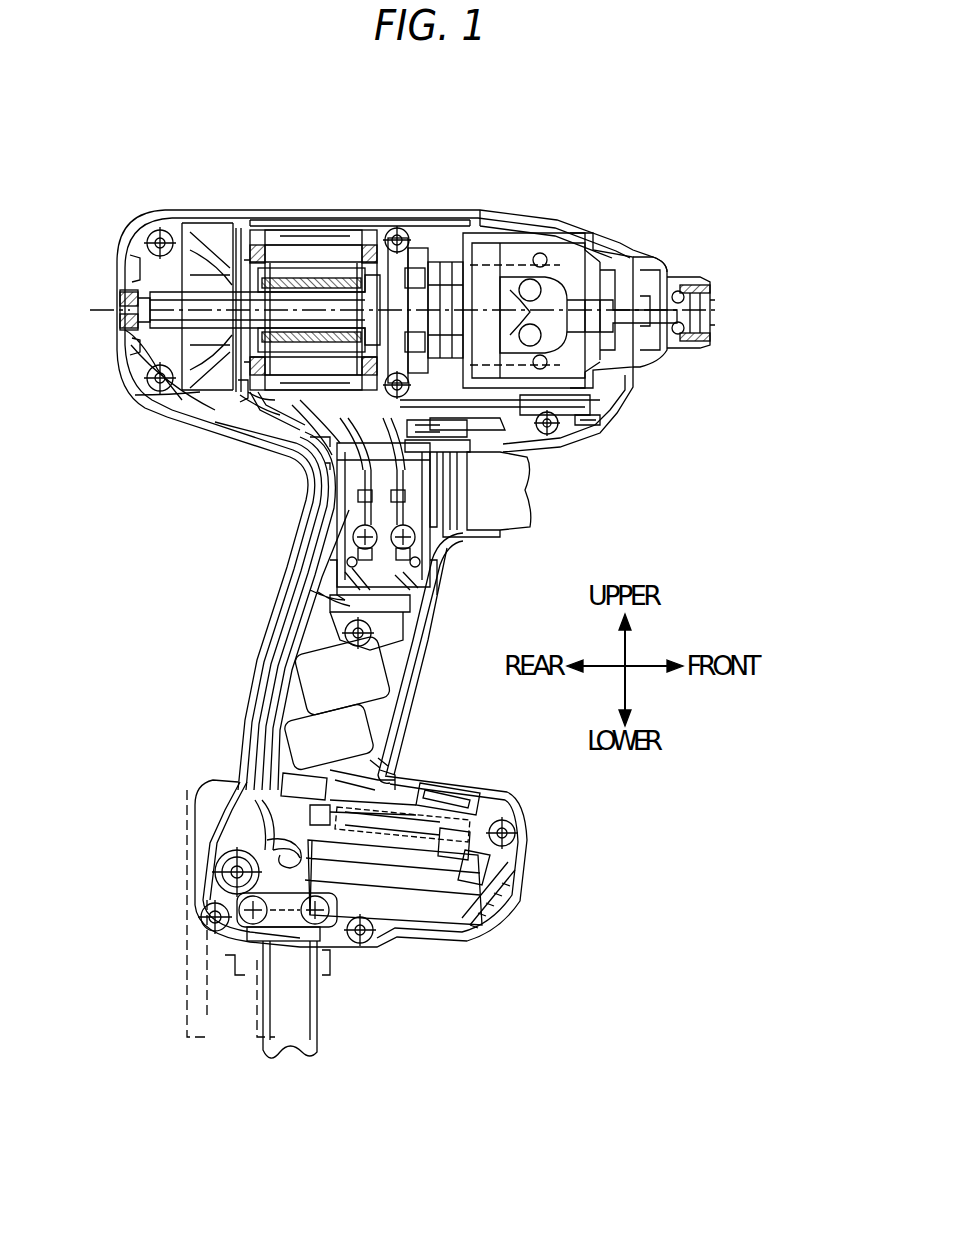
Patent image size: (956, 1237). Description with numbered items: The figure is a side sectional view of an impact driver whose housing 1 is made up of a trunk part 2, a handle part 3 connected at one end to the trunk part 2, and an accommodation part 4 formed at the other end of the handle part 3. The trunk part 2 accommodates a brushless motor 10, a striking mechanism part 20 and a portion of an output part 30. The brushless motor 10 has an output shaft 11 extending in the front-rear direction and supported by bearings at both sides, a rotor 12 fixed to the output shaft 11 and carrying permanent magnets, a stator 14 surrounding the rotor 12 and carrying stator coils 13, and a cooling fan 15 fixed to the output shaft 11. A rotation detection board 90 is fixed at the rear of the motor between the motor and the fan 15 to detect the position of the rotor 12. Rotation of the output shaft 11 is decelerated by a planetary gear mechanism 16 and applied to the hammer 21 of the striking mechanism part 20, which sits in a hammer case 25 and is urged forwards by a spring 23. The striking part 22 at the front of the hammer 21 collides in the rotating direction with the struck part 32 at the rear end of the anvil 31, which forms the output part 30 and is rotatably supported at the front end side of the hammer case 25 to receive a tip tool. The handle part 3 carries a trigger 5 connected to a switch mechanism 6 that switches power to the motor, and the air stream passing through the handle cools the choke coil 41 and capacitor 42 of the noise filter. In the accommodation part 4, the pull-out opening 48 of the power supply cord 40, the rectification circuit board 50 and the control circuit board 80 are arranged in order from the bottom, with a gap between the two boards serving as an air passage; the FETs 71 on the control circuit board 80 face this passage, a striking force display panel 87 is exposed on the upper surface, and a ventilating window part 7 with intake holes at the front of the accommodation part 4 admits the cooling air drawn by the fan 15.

The housing 1 is at (225, 205).
The trunk part 2 is at (548, 226).
The handle part 3 is at (284, 582).
The accommodation part 4 is at (517, 838).
The trigger 5 is at (515, 527).
The switch mechanism 6 is at (440, 562).
The ventilating window part 7 is at (522, 895).
The brushless motor 10 is at (333, 235).
The output shaft 11 is at (362, 268).
The rotor 12 is at (300, 232).
The stator coils 13 is at (245, 405).
The stator 14 is at (290, 380).
The cooling fan 15 is at (205, 225).
The planetary gear mechanism 16 is at (430, 245).
The striking mechanism part 20 is at (490, 235).
The hammer 21 is at (515, 255).
The striking part 22 is at (590, 250).
The spring 23 is at (510, 370).
The hammer case 25 is at (620, 392).
The output part 30 is at (630, 266).
The anvil 31 is at (668, 278).
The struck part 32 is at (605, 270).
The power supply cord 40 is at (314, 1040).
The choke coil 41 is at (290, 726).
The capacitor 42 is at (303, 665).
The pull-out opening 48 is at (232, 958).
The rectification circuit board 50 is at (370, 885).
The FETs 71 is at (445, 862).
The control circuit board 80 is at (400, 790).
The striking force display panel 87 is at (452, 792).
The rotation detection board 90 is at (210, 398).